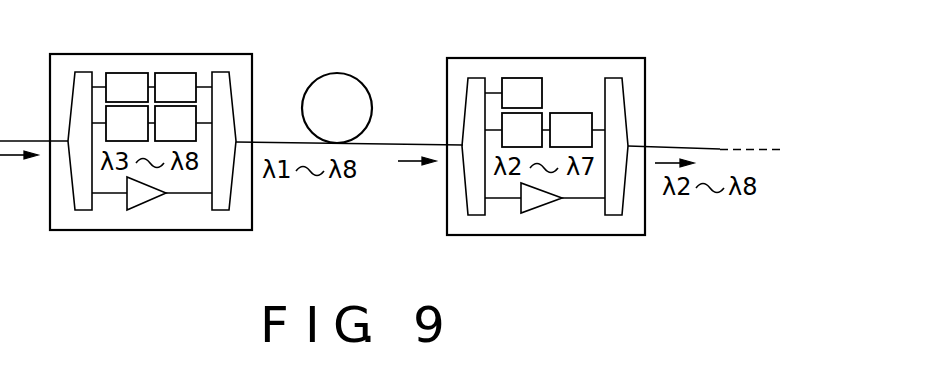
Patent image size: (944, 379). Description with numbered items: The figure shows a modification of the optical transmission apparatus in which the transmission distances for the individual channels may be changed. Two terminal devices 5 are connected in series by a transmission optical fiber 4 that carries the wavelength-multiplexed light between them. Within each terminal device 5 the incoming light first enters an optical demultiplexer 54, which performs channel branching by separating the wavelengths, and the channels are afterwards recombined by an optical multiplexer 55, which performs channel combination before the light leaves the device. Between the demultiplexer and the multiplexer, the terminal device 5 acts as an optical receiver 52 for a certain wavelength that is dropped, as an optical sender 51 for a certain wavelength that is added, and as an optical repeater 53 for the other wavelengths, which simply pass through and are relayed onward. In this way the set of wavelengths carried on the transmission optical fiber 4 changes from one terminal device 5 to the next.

The transmission optical fiber 4 is at (335, 73).
The terminal device 5 is at (229, 54).
The optical sender 51 is at (170, 72).
The optical receiver 52 is at (124, 72).
The optical repeater 53 is at (138, 210).
The optical demultiplexer 54 is at (80, 210).
The optical multiplexer 55 is at (217, 210).